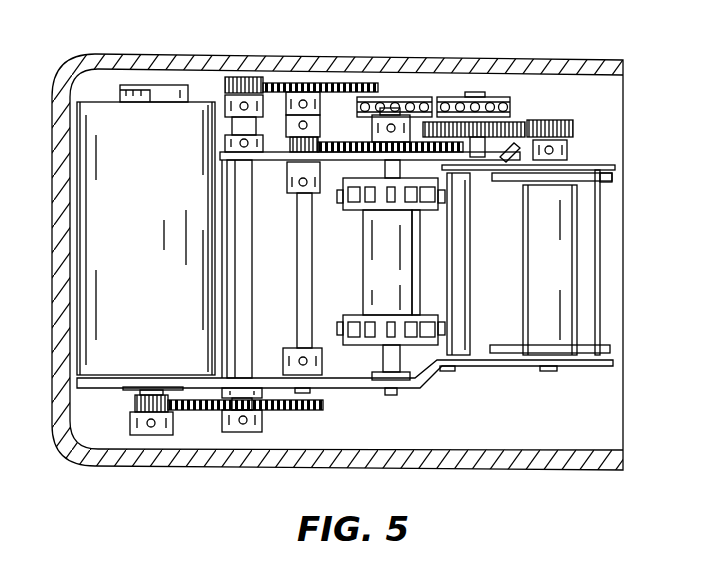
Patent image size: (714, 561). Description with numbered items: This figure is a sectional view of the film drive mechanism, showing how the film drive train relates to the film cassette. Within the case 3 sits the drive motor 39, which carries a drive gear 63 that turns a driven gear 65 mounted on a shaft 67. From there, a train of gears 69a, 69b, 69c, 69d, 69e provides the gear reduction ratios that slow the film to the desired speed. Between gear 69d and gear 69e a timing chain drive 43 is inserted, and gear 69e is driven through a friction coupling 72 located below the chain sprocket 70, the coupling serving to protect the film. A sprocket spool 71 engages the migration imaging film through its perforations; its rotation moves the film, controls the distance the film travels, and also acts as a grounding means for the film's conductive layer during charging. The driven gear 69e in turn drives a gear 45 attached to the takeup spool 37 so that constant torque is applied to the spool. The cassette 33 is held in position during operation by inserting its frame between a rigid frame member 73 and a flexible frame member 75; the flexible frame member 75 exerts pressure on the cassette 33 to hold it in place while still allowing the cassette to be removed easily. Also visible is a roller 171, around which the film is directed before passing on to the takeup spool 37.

The case 3 is at (52, 346).
The cassette 33 is at (600, 279).
The takeup spool 37 is at (537, 230).
The drive motor 39 is at (105, 272).
The timing chain drive 43 is at (441, 99).
The gear 45 is at (572, 130).
The drive gear 63 is at (130, 400).
The driven gear 65 is at (295, 410).
The shaft 67 is at (262, 272).
The gear 69a is at (245, 77).
The gear 69b is at (345, 80).
The gear 69c is at (318, 134).
The gear 69d is at (340, 163).
The gear 69e is at (524, 120).
The chain sprocket 70 is at (500, 96).
The sprocket spool 71 is at (372, 345).
The friction coupling 72 is at (485, 94).
The rigid frame member 73 is at (440, 372).
The flexible frame member 75 is at (517, 163).
The roller 171 is at (456, 298).